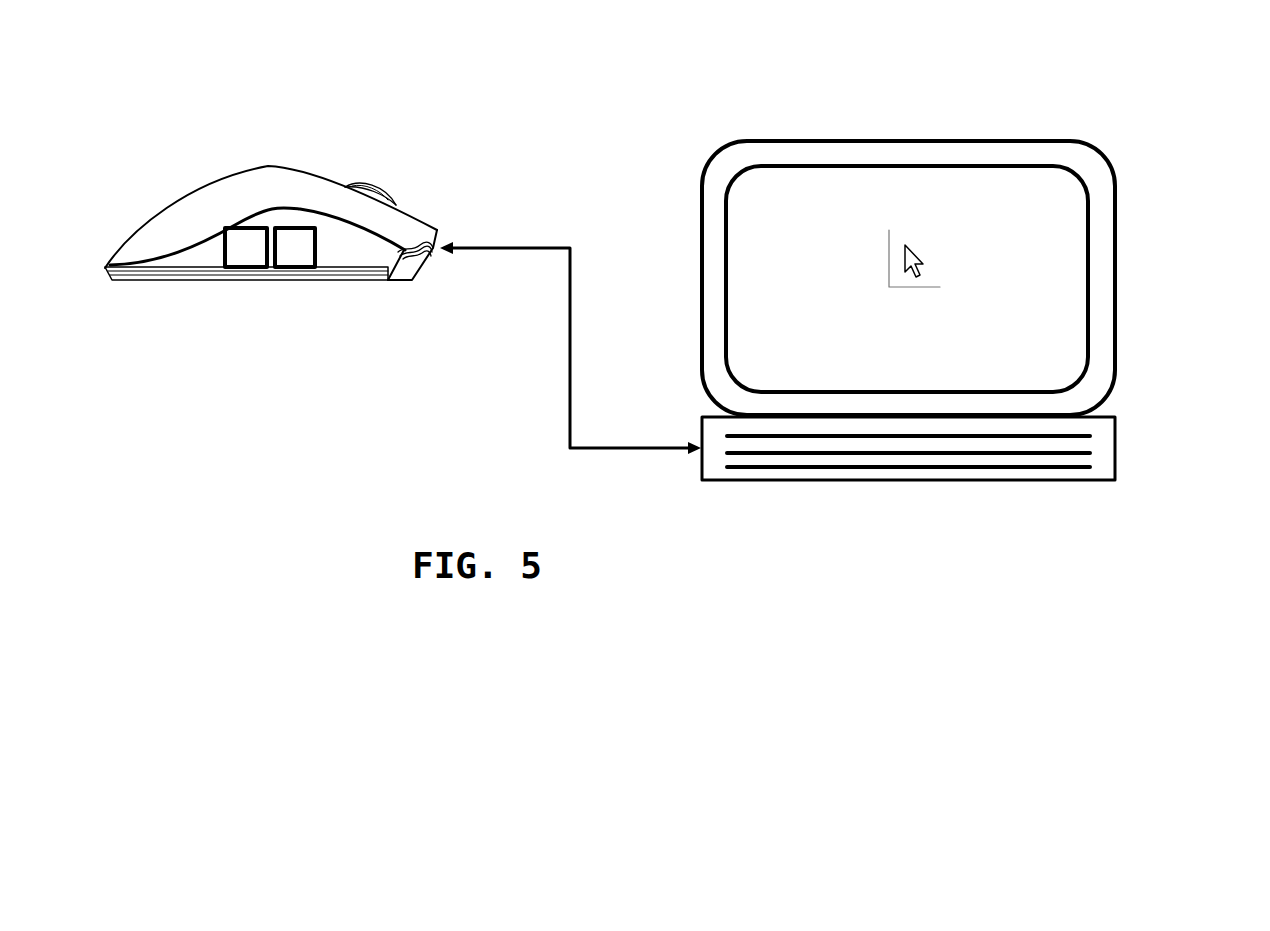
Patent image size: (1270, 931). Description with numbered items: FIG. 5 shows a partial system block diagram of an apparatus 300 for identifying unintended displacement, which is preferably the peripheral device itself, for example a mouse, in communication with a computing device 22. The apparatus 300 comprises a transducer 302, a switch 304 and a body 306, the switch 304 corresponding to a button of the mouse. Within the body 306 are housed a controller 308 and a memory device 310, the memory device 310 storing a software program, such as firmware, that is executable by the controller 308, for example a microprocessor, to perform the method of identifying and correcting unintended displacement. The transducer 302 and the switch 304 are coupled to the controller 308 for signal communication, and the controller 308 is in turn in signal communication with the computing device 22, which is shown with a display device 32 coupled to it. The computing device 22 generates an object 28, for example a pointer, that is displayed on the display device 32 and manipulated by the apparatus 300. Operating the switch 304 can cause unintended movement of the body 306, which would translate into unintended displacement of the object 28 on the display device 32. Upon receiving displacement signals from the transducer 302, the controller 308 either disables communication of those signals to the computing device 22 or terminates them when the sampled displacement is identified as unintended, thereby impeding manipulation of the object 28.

The apparatus 300 is at (381, 146).
The transducer 302 is at (338, 293).
The switch 304 is at (390, 228).
The body 306 is at (202, 217).
The controller 308 is at (303, 256).
The memory device 310 is at (240, 253).
The computing device 22 is at (1136, 410).
The object 28 is at (920, 230).
The display device 32 is at (1088, 178).